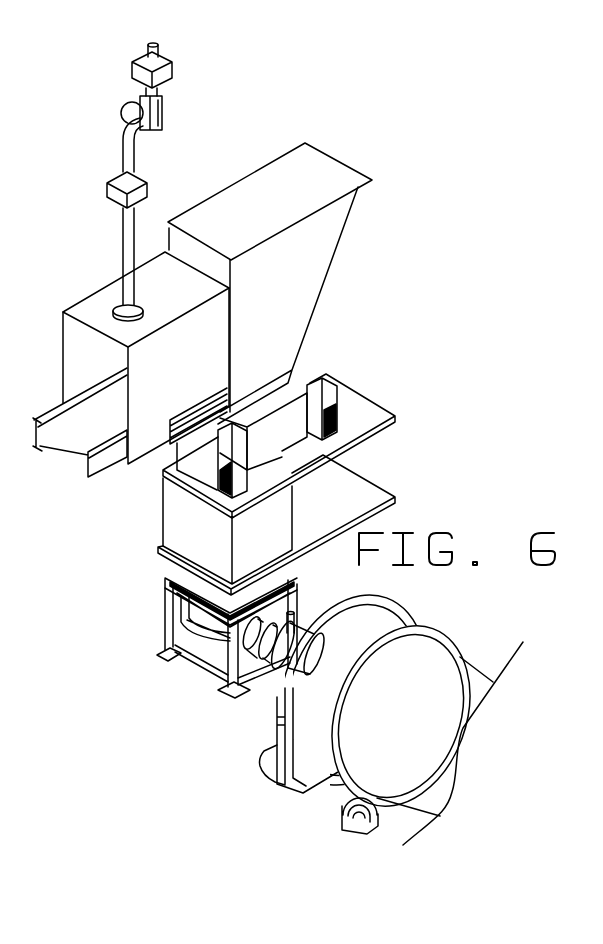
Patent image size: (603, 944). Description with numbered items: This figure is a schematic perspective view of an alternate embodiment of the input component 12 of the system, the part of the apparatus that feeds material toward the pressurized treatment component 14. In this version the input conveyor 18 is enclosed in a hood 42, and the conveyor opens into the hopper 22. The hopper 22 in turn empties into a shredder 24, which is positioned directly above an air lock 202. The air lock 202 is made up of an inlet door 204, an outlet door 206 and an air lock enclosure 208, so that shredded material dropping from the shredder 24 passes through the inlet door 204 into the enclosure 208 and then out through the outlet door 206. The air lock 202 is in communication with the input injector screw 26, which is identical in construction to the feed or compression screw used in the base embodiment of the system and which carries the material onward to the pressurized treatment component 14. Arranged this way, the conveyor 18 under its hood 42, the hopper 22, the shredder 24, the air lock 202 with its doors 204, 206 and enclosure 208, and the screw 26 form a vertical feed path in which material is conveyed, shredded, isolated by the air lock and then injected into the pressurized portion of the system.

The input component 12 is at (302, 305).
The pressurized treatment component 14 is at (389, 709).
The input conveyor 18 is at (78, 438).
The input hopper 22 is at (304, 201).
The shredder 24 is at (294, 414).
The feed or compression screw 26 is at (190, 638).
The hood 42 is at (139, 294).
The air lock 202 is at (278, 481).
The inlet door 204 is at (318, 442).
The outlet door 206 is at (322, 525).
The air lock enclosure 208 is at (181, 531).